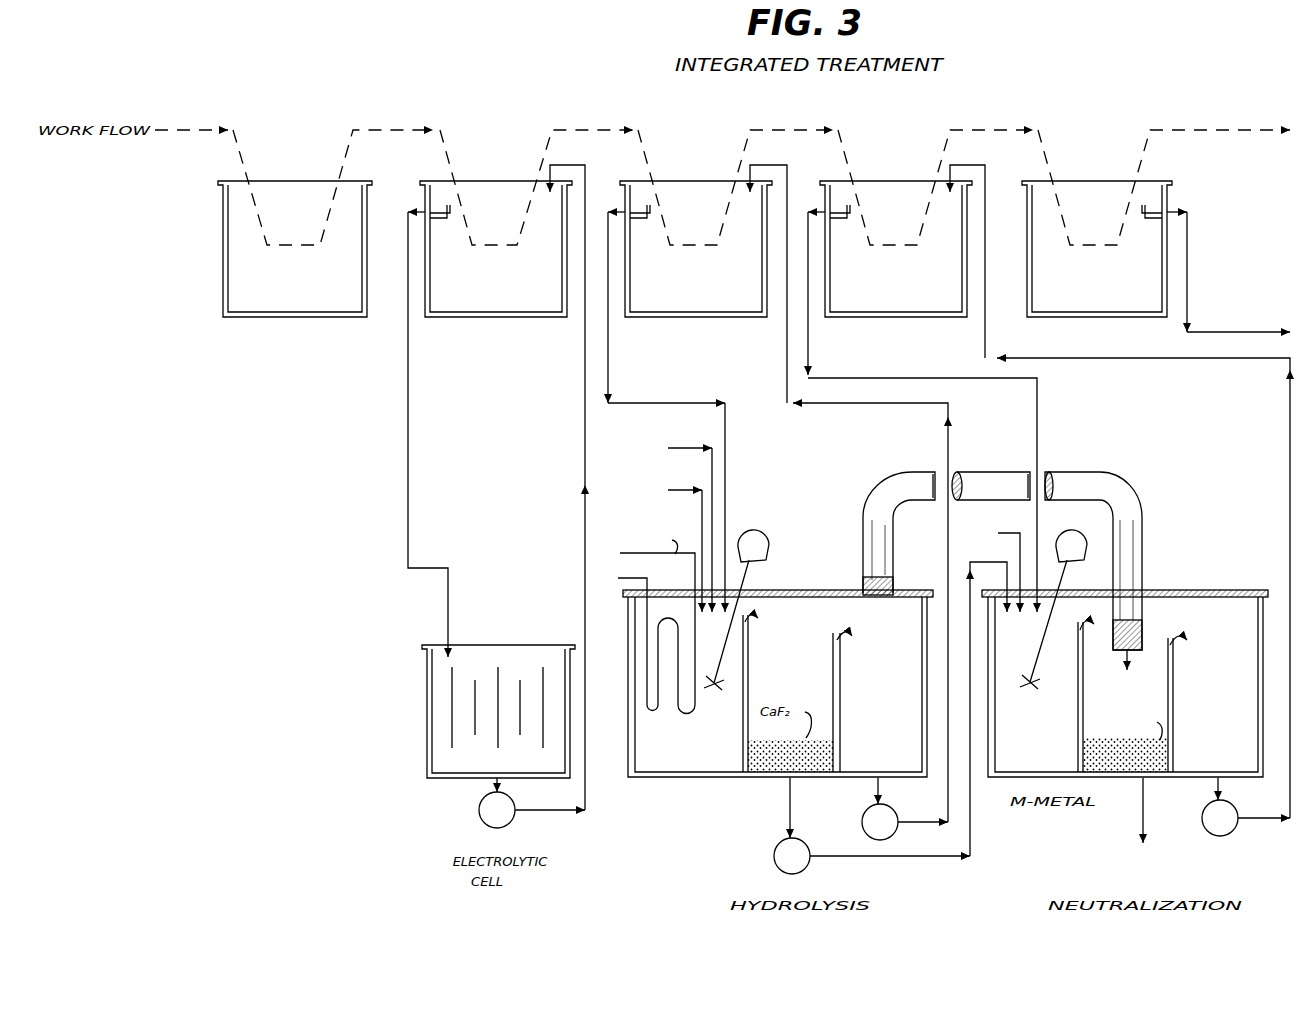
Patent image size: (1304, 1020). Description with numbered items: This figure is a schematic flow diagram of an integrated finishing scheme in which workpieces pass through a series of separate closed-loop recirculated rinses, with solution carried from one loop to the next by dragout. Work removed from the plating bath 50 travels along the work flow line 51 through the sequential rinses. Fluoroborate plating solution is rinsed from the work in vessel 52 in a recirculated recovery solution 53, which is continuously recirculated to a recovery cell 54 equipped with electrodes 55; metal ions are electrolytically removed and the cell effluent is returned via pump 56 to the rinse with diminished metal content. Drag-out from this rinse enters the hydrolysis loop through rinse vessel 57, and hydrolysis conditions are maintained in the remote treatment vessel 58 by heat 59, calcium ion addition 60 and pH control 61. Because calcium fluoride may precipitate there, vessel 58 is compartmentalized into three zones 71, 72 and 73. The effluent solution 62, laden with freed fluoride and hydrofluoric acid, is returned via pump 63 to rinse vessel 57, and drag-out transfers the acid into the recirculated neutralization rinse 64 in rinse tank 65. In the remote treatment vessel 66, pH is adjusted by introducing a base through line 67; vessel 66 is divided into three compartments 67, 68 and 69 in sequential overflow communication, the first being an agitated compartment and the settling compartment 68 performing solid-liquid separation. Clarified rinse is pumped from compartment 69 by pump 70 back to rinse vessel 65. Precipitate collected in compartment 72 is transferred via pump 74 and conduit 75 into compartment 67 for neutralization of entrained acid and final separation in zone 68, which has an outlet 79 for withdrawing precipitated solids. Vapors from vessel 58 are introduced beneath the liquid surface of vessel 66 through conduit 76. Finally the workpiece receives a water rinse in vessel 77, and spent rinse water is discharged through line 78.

The plating bath 50 is at (223, 286).
The work flow line 51 is at (404, 128).
The vessel 52 is at (468, 318).
The recirculated recovery solution 53 is at (585, 400).
The recovery cell 54 is at (427, 741).
The electrodes 55 is at (475, 703).
The pump 56 is at (479, 810).
The rinse vessel 57 is at (668, 318).
The treatment vessel 58 is at (662, 779).
The heat 59 is at (627, 582).
The calcium ion addition 60 is at (686, 491).
The pH control 61 is at (703, 449).
The effluent solution 62 is at (840, 405).
The pump 63 is at (862, 823).
The recirculated neutralization rinse 64 is at (950, 377).
The rinse tank 65 is at (868, 318).
The treatment vessel 66 is at (1162, 778).
The compartment 67 is at (1020, 548).
The settling compartment 68 is at (1119, 696).
The compartment 69 is at (1196, 704).
The pump 70 is at (1202, 832).
The zone 71 is at (672, 696).
The compartment 72 is at (772, 693).
The zone 73 is at (864, 702).
The pump 74 is at (774, 855).
The conduit 75 is at (972, 836).
The conduit 76 is at (918, 472).
The vessel 77 is at (1068, 318).
The line 78 is at (1190, 259).
The outlet 79 is at (1140, 828).